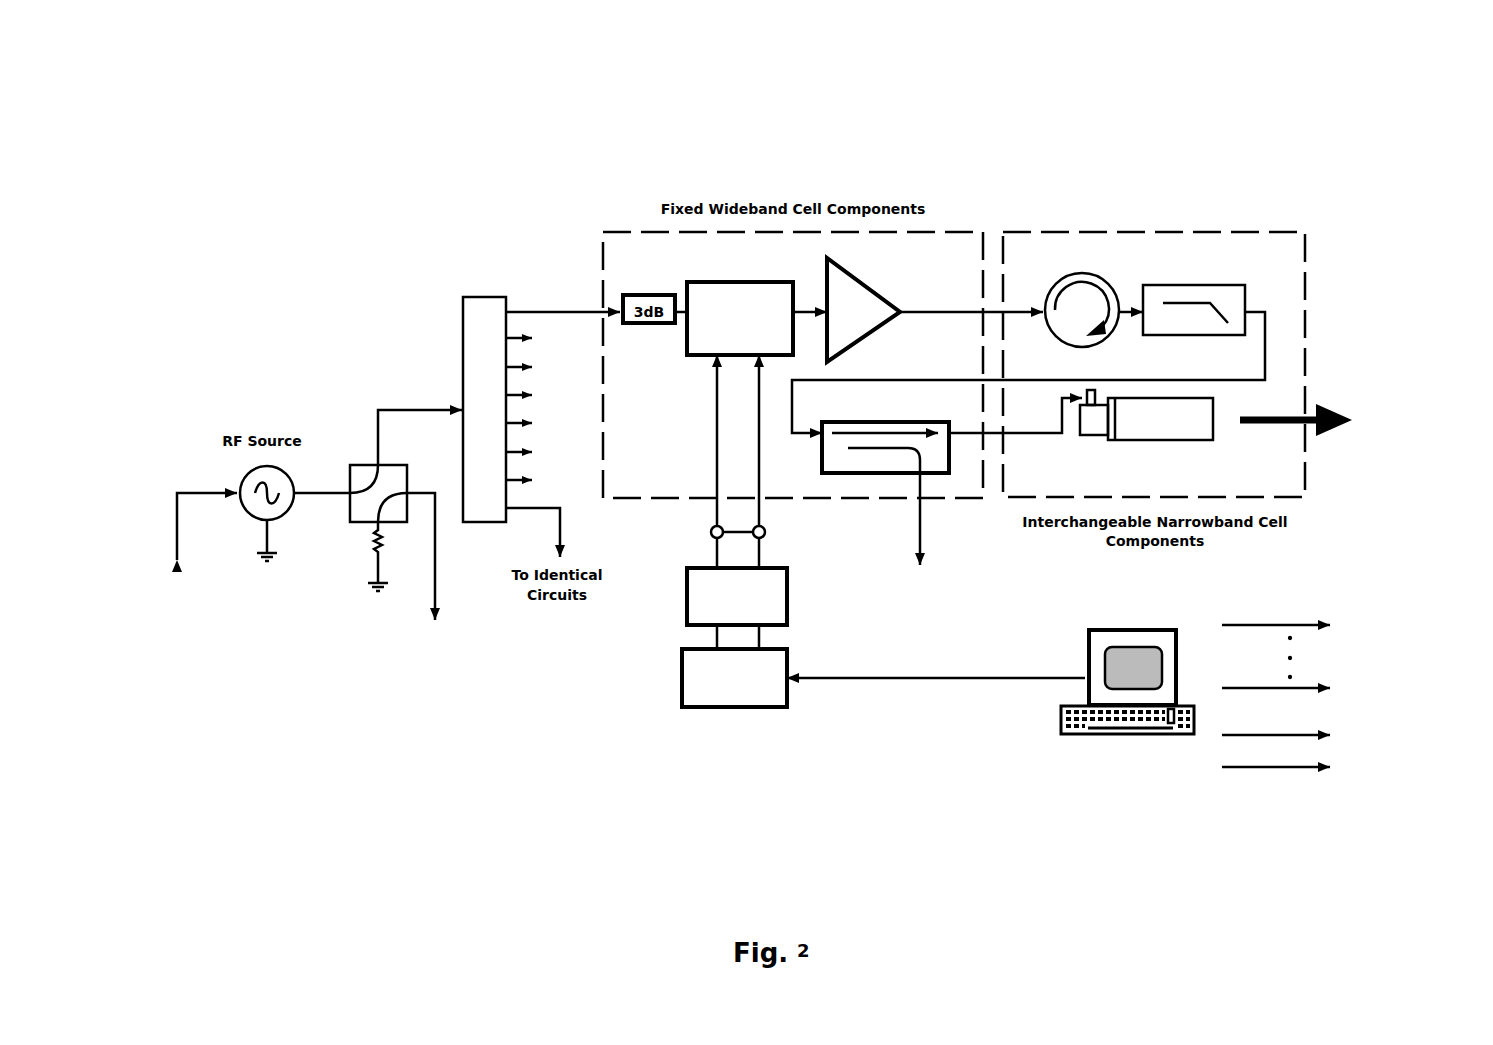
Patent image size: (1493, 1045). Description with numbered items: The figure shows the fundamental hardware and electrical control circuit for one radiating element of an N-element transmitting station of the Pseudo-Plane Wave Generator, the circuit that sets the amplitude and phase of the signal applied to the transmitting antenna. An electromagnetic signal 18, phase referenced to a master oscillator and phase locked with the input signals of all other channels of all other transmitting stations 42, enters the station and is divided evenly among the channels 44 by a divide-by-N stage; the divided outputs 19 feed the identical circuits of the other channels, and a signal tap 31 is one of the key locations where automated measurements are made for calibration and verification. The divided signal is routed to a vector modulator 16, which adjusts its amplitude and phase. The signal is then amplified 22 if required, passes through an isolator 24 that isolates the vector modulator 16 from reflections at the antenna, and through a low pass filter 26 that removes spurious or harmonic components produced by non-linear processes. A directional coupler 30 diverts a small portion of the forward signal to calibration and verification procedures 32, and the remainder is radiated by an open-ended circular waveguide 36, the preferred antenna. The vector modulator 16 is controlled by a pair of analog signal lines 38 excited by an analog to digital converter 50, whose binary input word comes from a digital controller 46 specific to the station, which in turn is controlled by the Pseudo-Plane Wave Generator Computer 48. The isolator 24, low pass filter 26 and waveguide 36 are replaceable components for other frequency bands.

The vector modulator 16 is at (687, 283).
The electromagnetic signal 18 is at (417, 408).
The divider outputs to identical circuits 19 is at (543, 409).
The amplifier 22 is at (883, 292).
The isolator 24 is at (1108, 277).
The low pass filter 26 is at (1222, 285).
The directional coupler 30 is at (878, 472).
The key measurement location 31 is at (432, 579).
The calibration and verification procedures 32 is at (918, 544).
The open-ended circular waveguide 36 is at (1215, 410).
The analog signal lines 38 is at (711, 532).
The other transmitting stations 42 is at (188, 573).
The channels 44 is at (463, 307).
The digital controller 46 is at (682, 678).
The Pseudo-Plane Wave Generator Computer 48 is at (1105, 630).
The analog to digital converter 50 is at (687, 602).